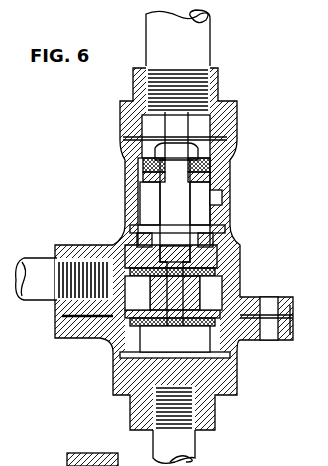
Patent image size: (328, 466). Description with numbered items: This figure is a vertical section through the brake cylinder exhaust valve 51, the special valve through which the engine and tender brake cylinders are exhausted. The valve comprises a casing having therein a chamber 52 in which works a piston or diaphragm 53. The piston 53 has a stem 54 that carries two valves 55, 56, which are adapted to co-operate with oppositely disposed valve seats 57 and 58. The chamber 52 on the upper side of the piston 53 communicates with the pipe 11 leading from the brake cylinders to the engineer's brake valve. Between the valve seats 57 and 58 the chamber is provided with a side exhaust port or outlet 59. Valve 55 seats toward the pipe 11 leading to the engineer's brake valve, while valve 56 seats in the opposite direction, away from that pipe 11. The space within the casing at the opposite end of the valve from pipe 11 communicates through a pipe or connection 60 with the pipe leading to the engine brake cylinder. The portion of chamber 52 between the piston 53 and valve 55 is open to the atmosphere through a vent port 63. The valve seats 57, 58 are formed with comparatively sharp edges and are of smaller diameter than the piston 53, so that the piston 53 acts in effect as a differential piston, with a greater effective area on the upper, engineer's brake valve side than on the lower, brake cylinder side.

The pipe 11 is at (198, 48).
The brake cylinder exhaust valve 51 is at (174, 248).
The chamber 52 is at (148, 199).
The piston or diaphragm 53 is at (212, 168).
The stem 54 is at (175, 228).
The valve 55 is at (137, 293).
The valve 56 is at (213, 293).
The valve seat 57 is at (218, 262).
The valve seat 58 is at (118, 348).
The side exhaust port or outlet 59 is at (37, 262).
The pipe or connection 60 is at (186, 440).
The vent port 63 is at (223, 198).